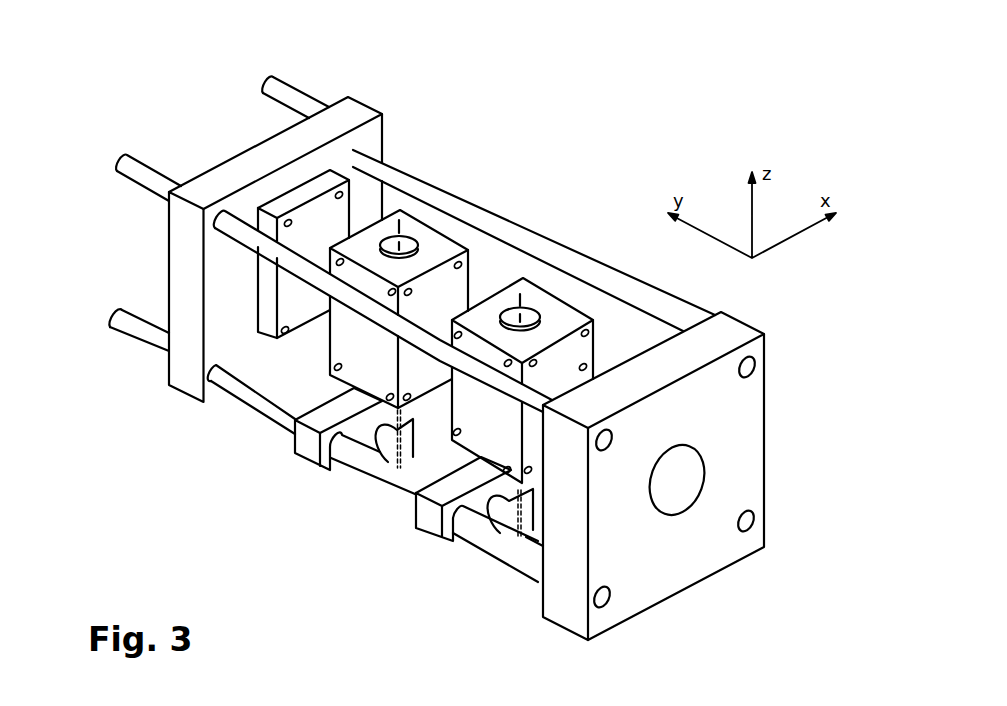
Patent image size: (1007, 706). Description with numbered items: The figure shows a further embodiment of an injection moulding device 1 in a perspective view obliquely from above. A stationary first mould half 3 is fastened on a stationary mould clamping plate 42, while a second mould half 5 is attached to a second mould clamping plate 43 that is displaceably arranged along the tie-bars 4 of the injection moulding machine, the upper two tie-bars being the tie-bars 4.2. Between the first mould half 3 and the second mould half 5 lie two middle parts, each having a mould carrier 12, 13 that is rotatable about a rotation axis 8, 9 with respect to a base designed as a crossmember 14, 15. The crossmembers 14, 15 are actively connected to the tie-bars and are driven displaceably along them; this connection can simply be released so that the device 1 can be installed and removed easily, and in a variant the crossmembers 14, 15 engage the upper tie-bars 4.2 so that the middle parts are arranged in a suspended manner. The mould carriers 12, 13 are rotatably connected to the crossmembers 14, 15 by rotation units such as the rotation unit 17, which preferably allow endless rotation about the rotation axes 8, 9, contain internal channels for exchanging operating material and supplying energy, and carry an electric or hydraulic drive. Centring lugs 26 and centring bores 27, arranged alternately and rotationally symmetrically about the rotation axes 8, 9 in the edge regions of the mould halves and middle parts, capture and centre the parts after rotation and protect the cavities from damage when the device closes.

The injection moulding device 1 is at (480, 358).
The stationary first mould half 3 is at (531, 545).
The tie-bars 4 is at (736, 529).
The upper tie-bars 4.2 is at (143, 172).
The second mould half 5 is at (268, 286).
The rotation axis 8 is at (525, 528).
The rotation axis 9 is at (380, 470).
The mould carrier 12 is at (547, 305).
The mould carrier 13 is at (441, 262).
The crossmember 14 is at (416, 498).
The crossmember 15 is at (295, 450).
The rotation unit 17 is at (338, 455).
The centring lugs 26 is at (339, 194).
The centring bores 27 is at (395, 286).
The stationary mould clamping plate 42 is at (622, 509).
The second mould clamping plate 43 is at (186, 367).